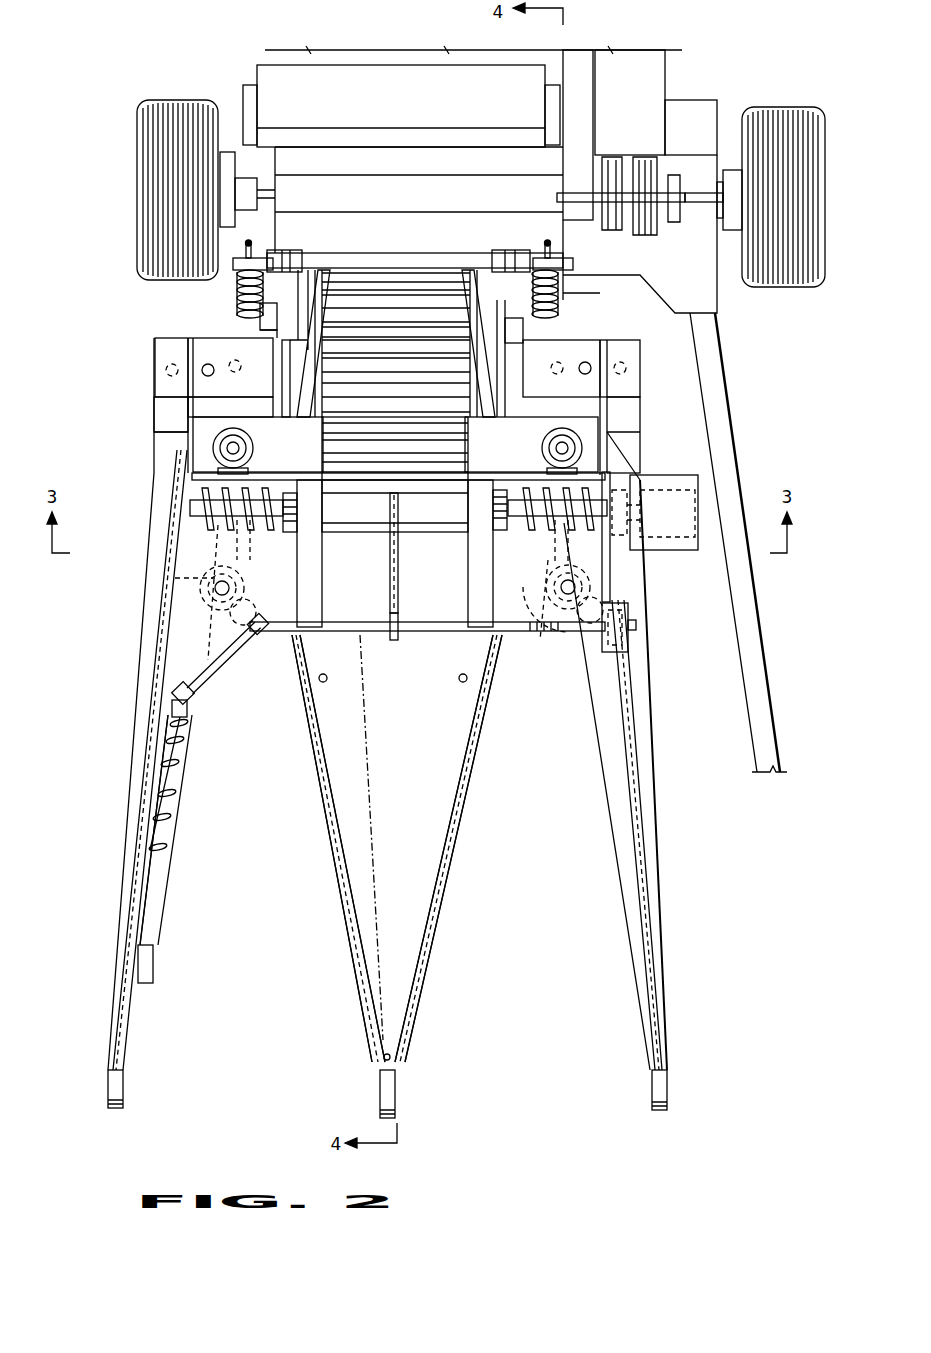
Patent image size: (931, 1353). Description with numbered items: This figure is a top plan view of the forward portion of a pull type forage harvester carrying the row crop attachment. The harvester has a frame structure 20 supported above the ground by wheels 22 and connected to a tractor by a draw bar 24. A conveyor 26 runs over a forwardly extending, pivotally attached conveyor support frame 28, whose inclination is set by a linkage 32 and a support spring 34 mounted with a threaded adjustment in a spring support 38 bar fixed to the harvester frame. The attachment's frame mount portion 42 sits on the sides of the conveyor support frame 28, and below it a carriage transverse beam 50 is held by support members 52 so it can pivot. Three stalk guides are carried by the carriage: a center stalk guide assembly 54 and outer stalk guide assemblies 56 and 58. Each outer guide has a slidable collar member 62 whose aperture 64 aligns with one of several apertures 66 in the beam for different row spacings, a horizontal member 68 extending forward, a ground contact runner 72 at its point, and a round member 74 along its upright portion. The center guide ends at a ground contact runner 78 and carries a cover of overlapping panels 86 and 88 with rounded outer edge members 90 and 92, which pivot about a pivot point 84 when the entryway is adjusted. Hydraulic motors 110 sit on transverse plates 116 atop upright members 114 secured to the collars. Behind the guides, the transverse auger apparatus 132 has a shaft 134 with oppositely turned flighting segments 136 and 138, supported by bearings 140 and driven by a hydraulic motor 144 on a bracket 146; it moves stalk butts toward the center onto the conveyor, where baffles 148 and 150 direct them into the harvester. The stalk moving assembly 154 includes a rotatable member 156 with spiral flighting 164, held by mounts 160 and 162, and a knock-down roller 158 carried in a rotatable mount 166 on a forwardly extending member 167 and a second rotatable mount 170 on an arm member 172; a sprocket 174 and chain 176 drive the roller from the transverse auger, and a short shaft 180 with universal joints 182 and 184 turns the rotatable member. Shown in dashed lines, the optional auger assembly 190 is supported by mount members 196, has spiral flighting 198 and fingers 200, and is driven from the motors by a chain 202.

The frame structure 20 is at (688, 90).
The wheels 22 is at (180, 108).
The draw bar 24 is at (775, 700).
The conveyor 26 is at (396, 306).
The conveyor support frame 28 is at (305, 285).
The linkage 32 is at (260, 318).
The support spring 34 is at (237, 292).
The spring support 38 is at (240, 262).
The frame mount portion 42 is at (295, 372).
The carriage transverse beam 50 is at (262, 330).
The support members 52 is at (260, 397).
The center stalk guide assembly 54 is at (456, 860).
The outer stalk guide assembly 56 is at (124, 800).
The outer stalk guide assembly 58 is at (657, 835).
The slidable collar member 62 is at (160, 352).
The aperture 64 is at (205, 365).
The apertures 66 is at (166, 372).
The horizontal member 68 is at (160, 443).
The ground contact runner 72 is at (115, 1090).
The round member 74 is at (162, 652).
The ground contact runner 78 is at (392, 1110).
The pivot point 84 is at (384, 1057).
The panel 86 is at (350, 808).
The panel 88 is at (430, 828).
The rounded outer edge member 90 is at (320, 790).
The rounded outer edge member 92 is at (462, 797).
The hydraulic motors 110 is at (254, 448).
The upright members 114 is at (190, 412).
The transverse plates 116 is at (203, 475).
The transverse auger apparatus 132 is at (202, 510).
The shaft 134 is at (452, 520).
The flighting segment 136 is at (205, 492).
The flighting segment 138 is at (600, 530).
The bearings 140 is at (300, 520).
The hydraulic motor 144 is at (685, 490).
The bracket 146 is at (683, 548).
The stalk directing baffle 148 is at (322, 322).
The stalk directing baffle 150 is at (478, 320).
The stalk moving assembly 154 is at (199, 786).
The rotatable member 156 is at (155, 888).
The knock-down roller 158 is at (540, 632).
The mount 160 is at (148, 960).
The mount 162 is at (187, 722).
The spiral flighting 164 is at (175, 775).
The rotatable mount 166 is at (590, 665).
The forwardly extending member 167 is at (625, 593).
The second rotatable mount 170 is at (312, 632).
The arm member 172 is at (312, 590).
The sprocket 174 is at (394, 642).
The chain 176 is at (398, 540).
The short shaft 180 is at (230, 650).
The universal joint 182 is at (253, 636).
The universal joint 184 is at (192, 687).
The optional auger assembly 190 is at (196, 604).
The mount members 196 is at (200, 592).
The spiral flighting 198 is at (175, 578).
The fingers 200 is at (213, 632).
The chain 202 is at (232, 548).